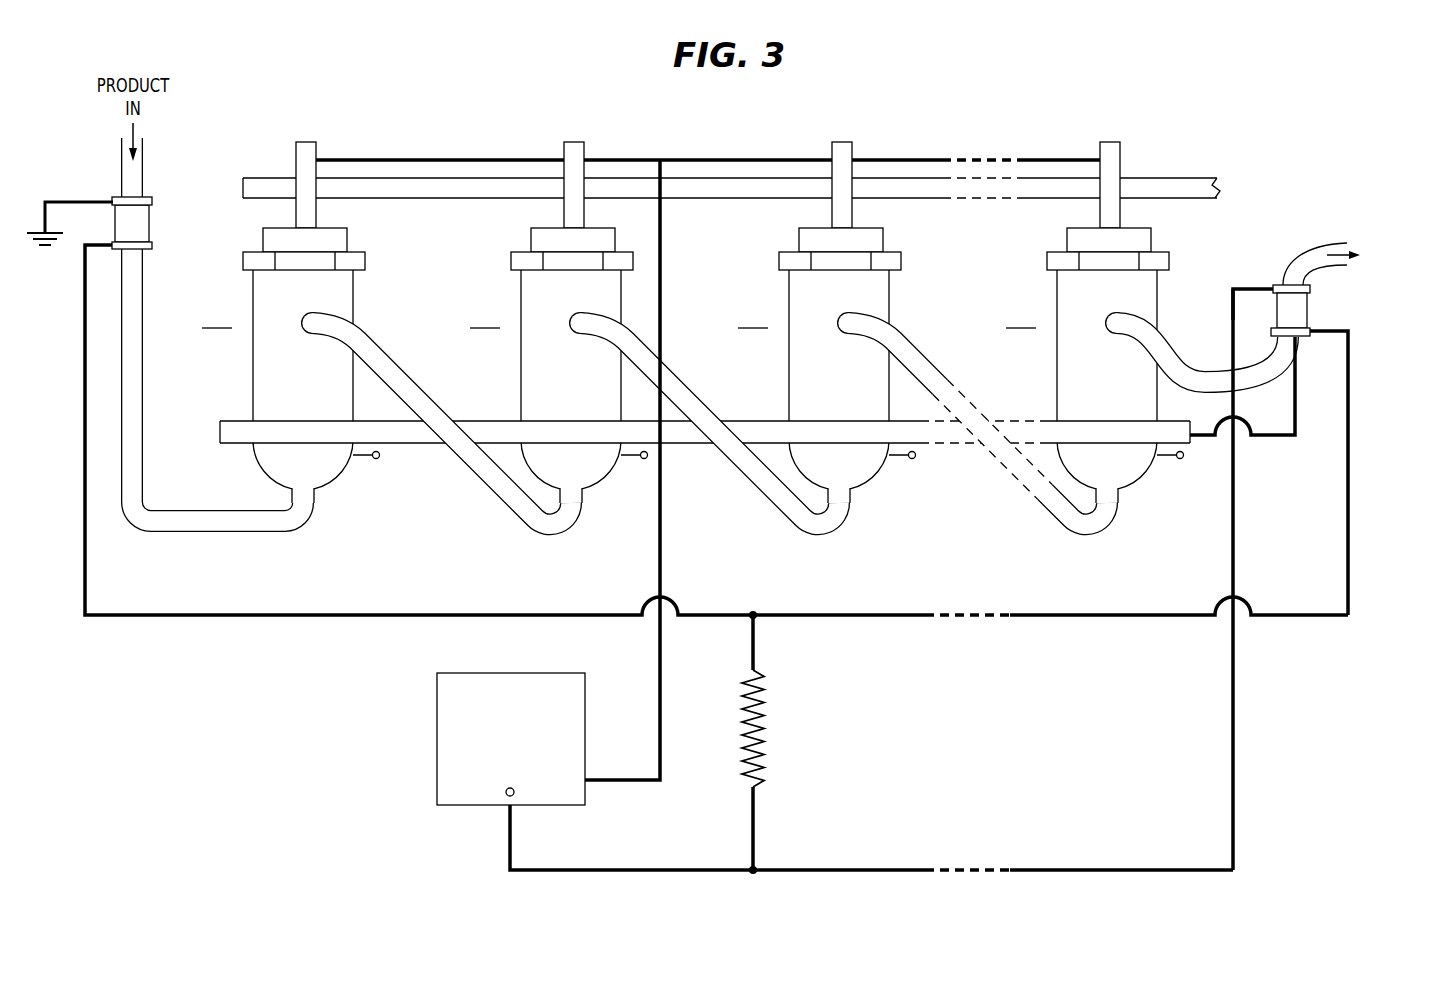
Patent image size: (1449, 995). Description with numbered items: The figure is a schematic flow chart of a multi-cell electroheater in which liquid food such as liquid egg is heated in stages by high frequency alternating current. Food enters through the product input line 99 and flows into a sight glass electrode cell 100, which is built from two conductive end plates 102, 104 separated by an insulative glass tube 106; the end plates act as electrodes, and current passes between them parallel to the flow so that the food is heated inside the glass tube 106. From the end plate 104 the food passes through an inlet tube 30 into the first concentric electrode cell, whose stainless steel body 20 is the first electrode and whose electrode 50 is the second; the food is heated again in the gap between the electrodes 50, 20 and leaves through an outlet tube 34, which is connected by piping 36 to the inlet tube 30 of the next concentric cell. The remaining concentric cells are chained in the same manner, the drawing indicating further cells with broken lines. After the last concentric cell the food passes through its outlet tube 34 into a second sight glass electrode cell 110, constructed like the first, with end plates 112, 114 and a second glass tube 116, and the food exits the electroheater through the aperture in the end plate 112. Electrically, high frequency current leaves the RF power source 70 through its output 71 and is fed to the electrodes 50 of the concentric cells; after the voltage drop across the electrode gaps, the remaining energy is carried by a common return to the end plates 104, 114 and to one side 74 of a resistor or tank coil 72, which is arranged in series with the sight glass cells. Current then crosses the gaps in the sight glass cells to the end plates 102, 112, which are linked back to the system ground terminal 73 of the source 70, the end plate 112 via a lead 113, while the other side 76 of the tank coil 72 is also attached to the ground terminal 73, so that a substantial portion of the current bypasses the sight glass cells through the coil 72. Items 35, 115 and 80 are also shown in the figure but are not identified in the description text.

The electrode 50 is at (296, 150).
The body 20 is at (253, 393).
The inlet tube 30 is at (315, 490).
The outlet tube 34 is at (367, 332).
The drain valve 35 is at (376, 459).
The piping 36 is at (316, 512).
The product input line 99 is at (650, 323).
The sight glass electrode cell 100 is at (153, 197).
The end plate 102 is at (113, 199).
The end plate 104 is at (152, 246).
The insulative glass tube 106 is at (150, 222).
The second sight glass electrode cell 110 is at (1277, 302).
The end plate 112 is at (1288, 285).
The lead 113 is at (1233, 735).
The end plate 114 is at (1318, 340).
The ground return conductor 115 is at (1072, 618).
The second glass tube 116 is at (1307, 308).
The high frequency RF power source 70 is at (437, 704).
The output 71 is at (590, 782).
The resistor or tank coil 72 is at (745, 712).
The second terminal 73 is at (506, 795).
The side of resistor 74 is at (753, 612).
The other side of resistor 76 is at (756, 868).
The electrical circuit 80 is at (942, 685).